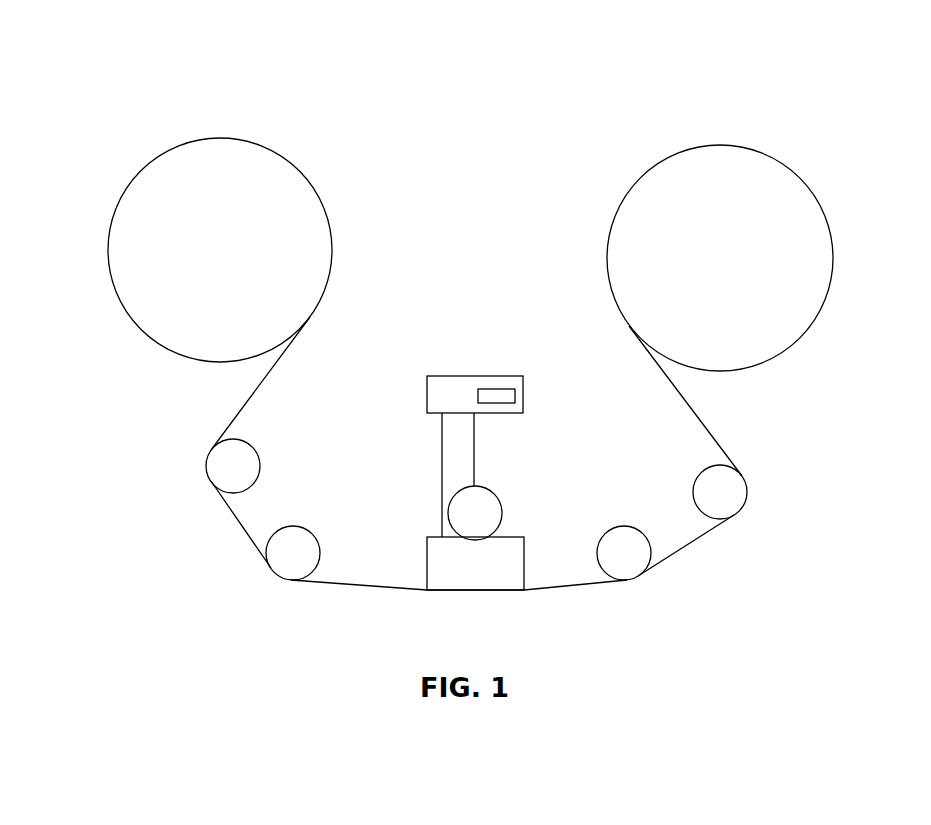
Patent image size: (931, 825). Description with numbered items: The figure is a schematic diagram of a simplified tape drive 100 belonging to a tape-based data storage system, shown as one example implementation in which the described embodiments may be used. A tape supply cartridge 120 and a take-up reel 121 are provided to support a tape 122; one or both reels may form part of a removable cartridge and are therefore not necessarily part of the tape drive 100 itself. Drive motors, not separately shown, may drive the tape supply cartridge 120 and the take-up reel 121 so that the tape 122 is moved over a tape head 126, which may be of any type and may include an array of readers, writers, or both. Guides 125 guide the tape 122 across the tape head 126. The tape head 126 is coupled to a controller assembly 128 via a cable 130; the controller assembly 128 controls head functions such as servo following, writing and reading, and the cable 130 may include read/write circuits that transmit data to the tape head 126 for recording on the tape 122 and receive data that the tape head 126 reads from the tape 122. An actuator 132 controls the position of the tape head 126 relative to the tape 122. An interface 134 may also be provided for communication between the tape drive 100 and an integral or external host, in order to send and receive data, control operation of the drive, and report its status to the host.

The tape drive 100 is at (112, 138).
The tape supply cartridge 120 is at (222, 137).
The take-up reel 121 is at (718, 145).
The tape 122 is at (362, 585).
The guides 125 is at (260, 463).
The tape head 126 is at (524, 562).
The controller assembly 128 is at (473, 376).
The cable 130 is at (443, 510).
The actuator 132 is at (498, 492).
The interface 134 is at (505, 389).